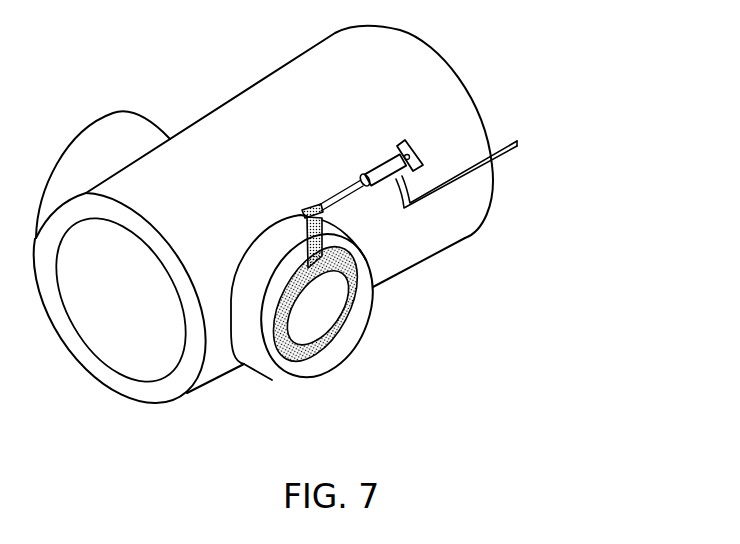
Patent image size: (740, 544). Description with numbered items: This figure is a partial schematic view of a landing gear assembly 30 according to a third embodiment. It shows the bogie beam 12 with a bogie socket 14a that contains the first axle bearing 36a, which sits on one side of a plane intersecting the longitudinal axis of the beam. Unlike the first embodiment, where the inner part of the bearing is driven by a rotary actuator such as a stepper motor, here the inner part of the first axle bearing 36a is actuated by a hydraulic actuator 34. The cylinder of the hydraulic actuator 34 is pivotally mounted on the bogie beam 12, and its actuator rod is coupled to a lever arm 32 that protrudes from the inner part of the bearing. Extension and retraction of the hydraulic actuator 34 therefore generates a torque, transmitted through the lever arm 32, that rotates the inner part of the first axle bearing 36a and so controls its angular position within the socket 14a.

The bogie beam 12 is at (458, 222).
The bogie socket 14a is at (361, 319).
The landing gear assembly 30 is at (586, 70).
The lever arm 32 is at (320, 236).
The hydraulic actuator 34 is at (380, 172).
The first axle bearing 36a is at (303, 327).